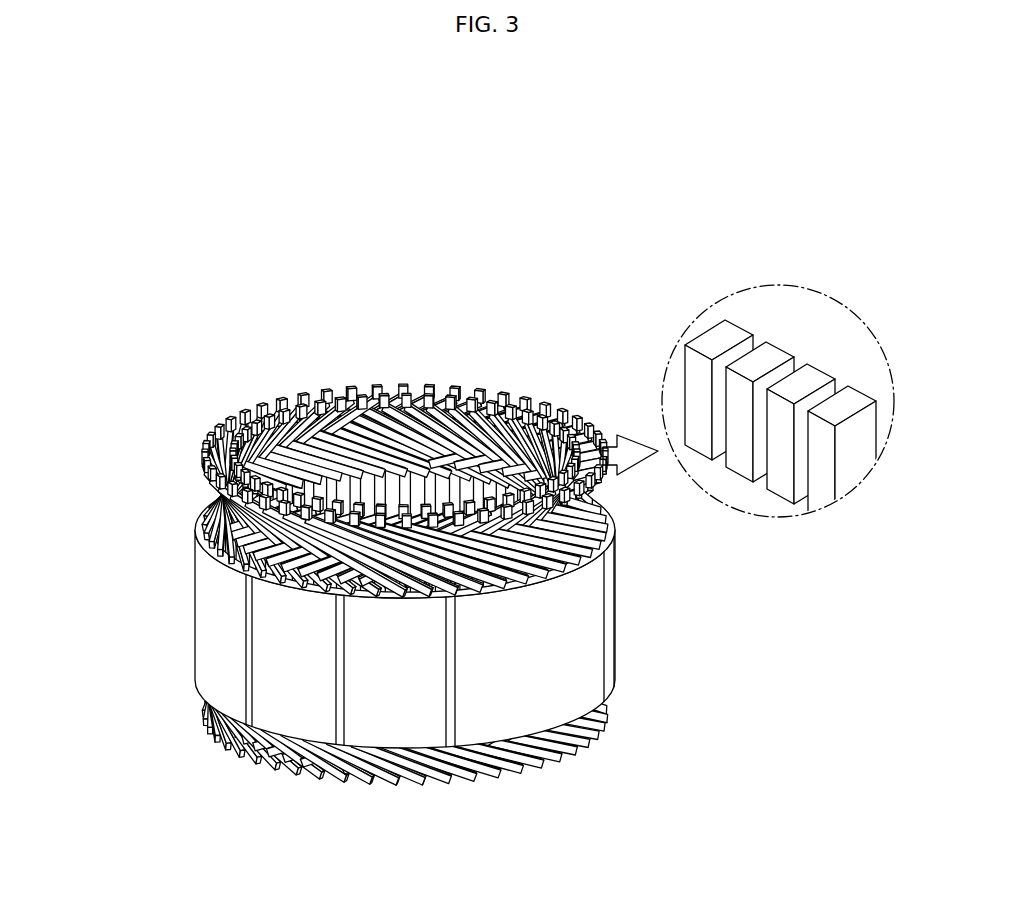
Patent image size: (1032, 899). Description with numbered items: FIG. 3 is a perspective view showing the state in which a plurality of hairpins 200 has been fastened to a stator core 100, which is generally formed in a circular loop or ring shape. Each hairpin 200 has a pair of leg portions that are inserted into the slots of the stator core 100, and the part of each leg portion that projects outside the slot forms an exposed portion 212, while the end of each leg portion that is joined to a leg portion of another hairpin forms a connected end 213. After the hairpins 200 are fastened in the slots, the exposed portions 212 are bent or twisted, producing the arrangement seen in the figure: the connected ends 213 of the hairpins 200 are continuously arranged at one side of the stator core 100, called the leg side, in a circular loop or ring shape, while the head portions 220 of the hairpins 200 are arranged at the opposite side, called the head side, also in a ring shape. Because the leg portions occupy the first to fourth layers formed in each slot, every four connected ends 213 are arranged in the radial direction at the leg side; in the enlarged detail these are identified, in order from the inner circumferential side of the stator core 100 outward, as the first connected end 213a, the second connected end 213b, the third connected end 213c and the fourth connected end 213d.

The stator core 100 is at (474, 517).
The hairpin 200 is at (546, 517).
The exposed portion 212 is at (560, 557).
The connected end 213 is at (433, 392).
The first connected end 213a is at (722, 333).
The second connected end 213b is at (775, 358).
The third connected end 213c is at (813, 380).
The fourth connected end 213d is at (850, 408).
The head portion 220 is at (343, 780).